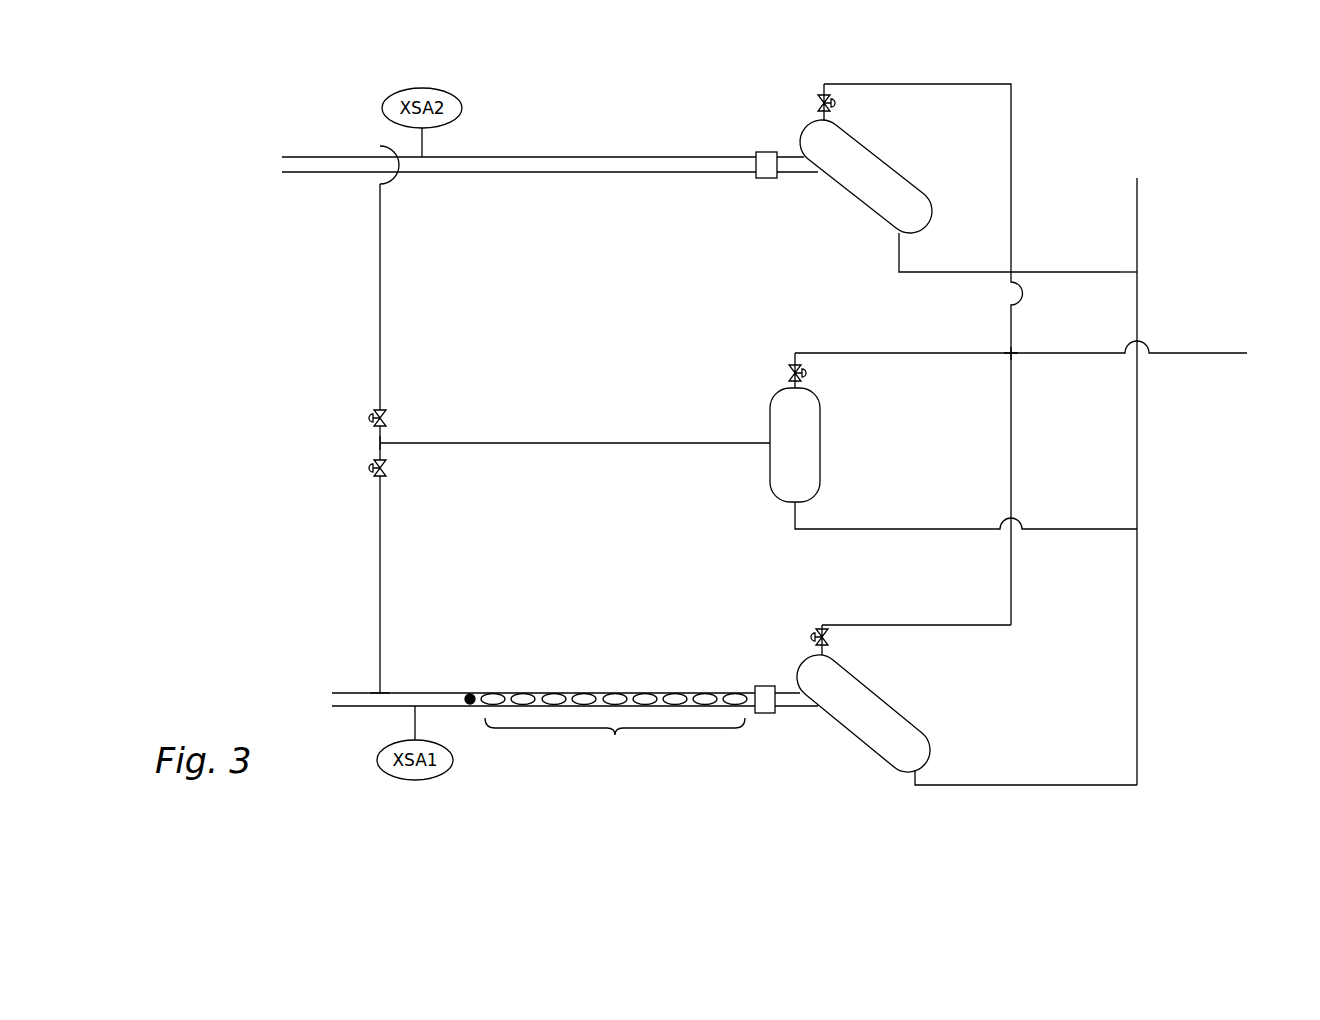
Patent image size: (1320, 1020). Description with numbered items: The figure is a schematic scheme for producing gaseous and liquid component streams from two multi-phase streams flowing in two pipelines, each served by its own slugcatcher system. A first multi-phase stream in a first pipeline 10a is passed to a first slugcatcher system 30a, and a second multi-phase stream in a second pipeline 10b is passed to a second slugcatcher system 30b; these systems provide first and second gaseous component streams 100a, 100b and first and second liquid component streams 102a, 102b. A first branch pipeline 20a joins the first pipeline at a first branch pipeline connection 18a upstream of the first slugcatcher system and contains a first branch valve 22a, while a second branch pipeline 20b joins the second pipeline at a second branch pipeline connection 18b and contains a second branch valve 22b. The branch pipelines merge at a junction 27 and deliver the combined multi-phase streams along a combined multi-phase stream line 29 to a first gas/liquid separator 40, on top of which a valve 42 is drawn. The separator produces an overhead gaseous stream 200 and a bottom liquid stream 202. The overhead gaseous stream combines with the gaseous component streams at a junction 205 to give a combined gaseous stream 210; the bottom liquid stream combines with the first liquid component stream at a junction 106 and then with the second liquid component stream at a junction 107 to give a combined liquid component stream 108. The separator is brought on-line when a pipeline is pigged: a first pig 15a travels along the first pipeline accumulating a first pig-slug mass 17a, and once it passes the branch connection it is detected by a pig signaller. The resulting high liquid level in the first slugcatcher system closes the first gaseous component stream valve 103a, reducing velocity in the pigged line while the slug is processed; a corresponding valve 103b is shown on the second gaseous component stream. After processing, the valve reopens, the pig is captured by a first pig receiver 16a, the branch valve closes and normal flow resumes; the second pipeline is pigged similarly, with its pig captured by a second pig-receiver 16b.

The first pipeline 10a is at (361, 694).
The second pipeline 10b is at (333, 172).
The first pig 15a is at (472, 703).
The first pig-slug mass 17a is at (618, 735).
The first pig receiver 16a is at (763, 686).
The second pig-receiver 16b is at (765, 150).
The first branch pipeline connection 18a is at (378, 691).
The second branch pipeline connection 18b is at (378, 153).
The first branch pipeline 20a is at (381, 575).
The second branch pipeline 20b is at (381, 265).
The first branch valve 22a is at (383, 467).
The second branch valve 22b is at (385, 422).
The junction 27 is at (379, 442).
The combined multi-phase stream line 29 is at (588, 443).
The first slugcatcher system 30a is at (898, 705).
The second slugcatcher system 30b is at (885, 158).
The first gas/liquid separator 40 is at (822, 438).
The tank valve 42 is at (792, 373).
The first gaseous component stream 100a is at (918, 623).
The second gaseous component stream 100b is at (927, 83).
The first liquid component stream 102a is at (1042, 787).
The second liquid component stream 102b is at (1082, 272).
The first gaseous component stream valve 103a is at (825, 633).
The second gas valve 103b is at (822, 96).
The junction 106 is at (1140, 527).
The junction 107 is at (1140, 268).
The combined liquid component stream 108 is at (1140, 208).
The overhead gaseous stream 200 is at (920, 353).
The bottom liquid stream 202 is at (912, 525).
The junction 205 is at (1007, 355).
The combined gaseous stream 210 is at (1215, 353).